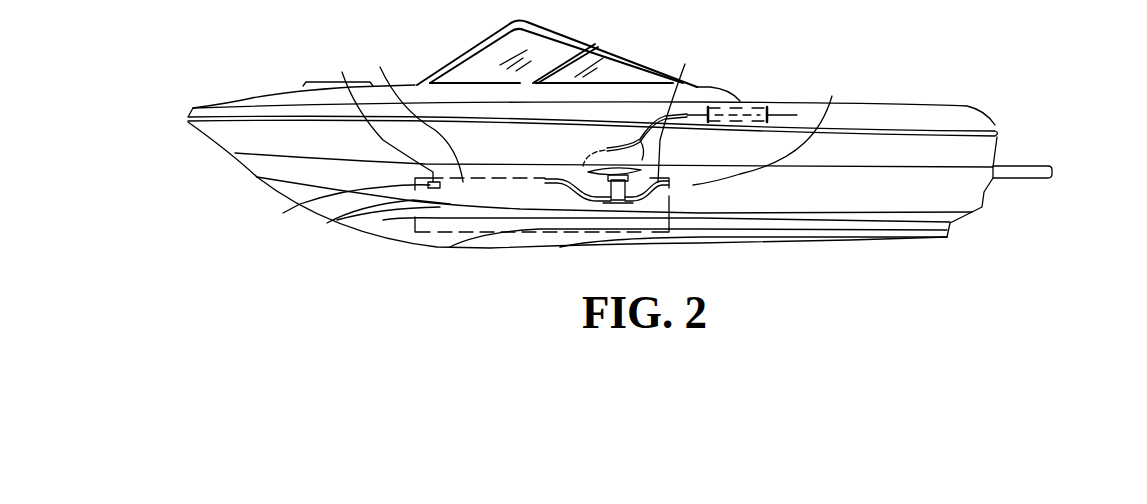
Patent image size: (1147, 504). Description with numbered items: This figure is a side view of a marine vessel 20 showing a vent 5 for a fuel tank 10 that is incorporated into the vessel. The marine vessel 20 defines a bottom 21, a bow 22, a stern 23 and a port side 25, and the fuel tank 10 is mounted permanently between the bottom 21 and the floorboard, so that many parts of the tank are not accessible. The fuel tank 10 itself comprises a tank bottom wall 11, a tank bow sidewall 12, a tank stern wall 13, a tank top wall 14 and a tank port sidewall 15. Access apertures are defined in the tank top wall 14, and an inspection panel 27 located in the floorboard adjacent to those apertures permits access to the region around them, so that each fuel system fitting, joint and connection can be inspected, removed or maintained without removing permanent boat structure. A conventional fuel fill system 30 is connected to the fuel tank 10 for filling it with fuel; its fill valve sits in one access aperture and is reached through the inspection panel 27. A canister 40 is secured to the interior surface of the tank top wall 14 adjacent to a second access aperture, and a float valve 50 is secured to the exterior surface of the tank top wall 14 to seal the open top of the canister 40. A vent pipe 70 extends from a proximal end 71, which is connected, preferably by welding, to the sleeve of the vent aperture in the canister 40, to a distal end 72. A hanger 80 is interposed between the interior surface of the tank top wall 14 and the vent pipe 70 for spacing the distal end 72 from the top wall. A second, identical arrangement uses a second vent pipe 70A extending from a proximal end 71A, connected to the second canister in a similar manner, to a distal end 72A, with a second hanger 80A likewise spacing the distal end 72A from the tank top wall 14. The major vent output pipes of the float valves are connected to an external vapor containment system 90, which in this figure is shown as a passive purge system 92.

The vent 5 is at (801, 58).
The fuel tank 10 is at (327, 223).
The tank bottom wall 11 is at (467, 234).
The tank bow sidewall 12 is at (383, 220).
The tank stern wall 13 is at (683, 210).
The tank top wall 14 is at (415, 113).
The tank port sidewall 15 is at (443, 218).
The marine vessel 20 is at (250, 92).
The bottom 21 is at (790, 238).
The bow 22 is at (204, 140).
The stern 23 is at (998, 126).
The port side 25 is at (827, 187).
The inspection panel 27 is at (600, 140).
The fuel fill system 30 is at (520, 262).
The canister 40 is at (615, 204).
The float valve 50 is at (615, 168).
The vent pipe 70 is at (488, 180).
The vent pipe 70A is at (640, 207).
The proximal end 71 is at (605, 203).
The proximal end 71A is at (619, 207).
The distal end 72 is at (344, 206).
The distal end 72A is at (773, 130).
The hanger 80 is at (383, 116).
The hanger 80A is at (685, 111).
The external vapor containment system 90 is at (733, 107).
The passive purge system 92 is at (753, 107).